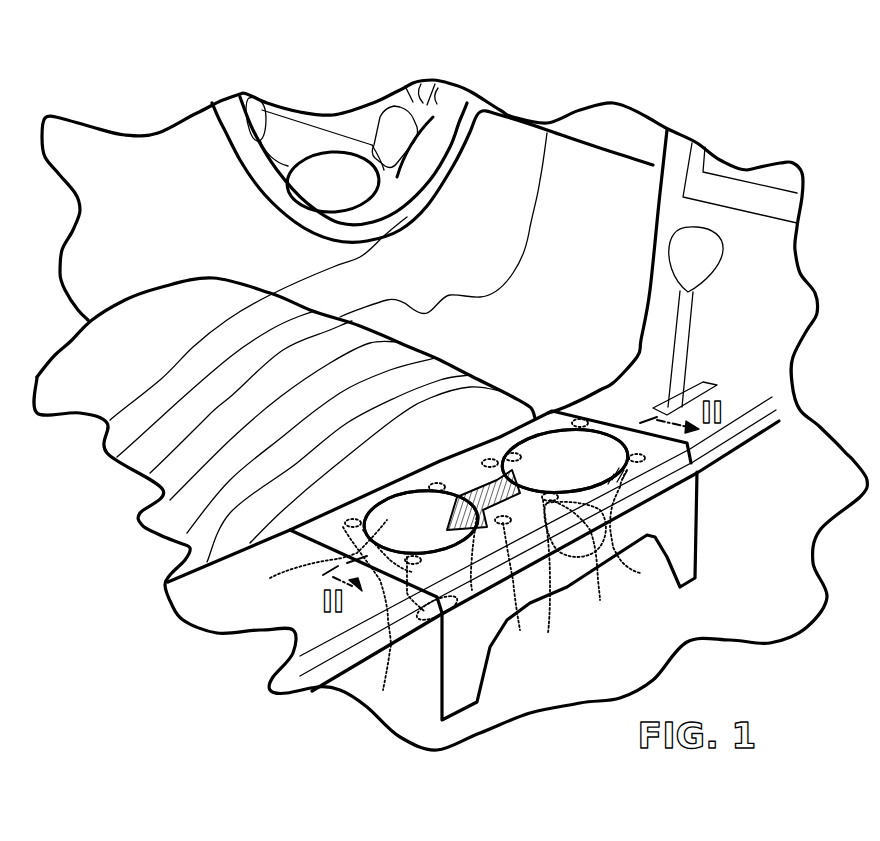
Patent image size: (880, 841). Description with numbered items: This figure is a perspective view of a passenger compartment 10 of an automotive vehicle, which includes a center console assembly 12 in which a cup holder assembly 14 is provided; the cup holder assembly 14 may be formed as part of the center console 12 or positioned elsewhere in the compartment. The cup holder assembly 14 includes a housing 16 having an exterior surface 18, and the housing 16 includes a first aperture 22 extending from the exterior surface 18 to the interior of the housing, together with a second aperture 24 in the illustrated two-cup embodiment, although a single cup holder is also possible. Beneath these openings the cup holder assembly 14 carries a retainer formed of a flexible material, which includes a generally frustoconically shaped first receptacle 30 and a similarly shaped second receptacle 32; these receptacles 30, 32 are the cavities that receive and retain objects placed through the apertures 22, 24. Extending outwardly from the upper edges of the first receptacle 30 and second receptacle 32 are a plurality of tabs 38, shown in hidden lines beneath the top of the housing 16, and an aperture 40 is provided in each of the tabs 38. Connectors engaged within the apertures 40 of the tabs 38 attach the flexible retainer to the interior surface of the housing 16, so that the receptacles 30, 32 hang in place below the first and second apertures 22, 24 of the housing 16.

The passenger compartment 10 is at (170, 217).
The center console assembly 12 is at (213, 598).
The cup holder assembly 14 is at (470, 440).
The housing 16 is at (677, 510).
The exterior surface 18 is at (313, 523).
The first aperture 22 is at (383, 507).
The second aperture 24 is at (560, 430).
The first receptacle 30 is at (418, 526).
The second receptacle 32 is at (580, 442).
The tabs 38 is at (457, 586).
The aperture 40 is at (477, 497).